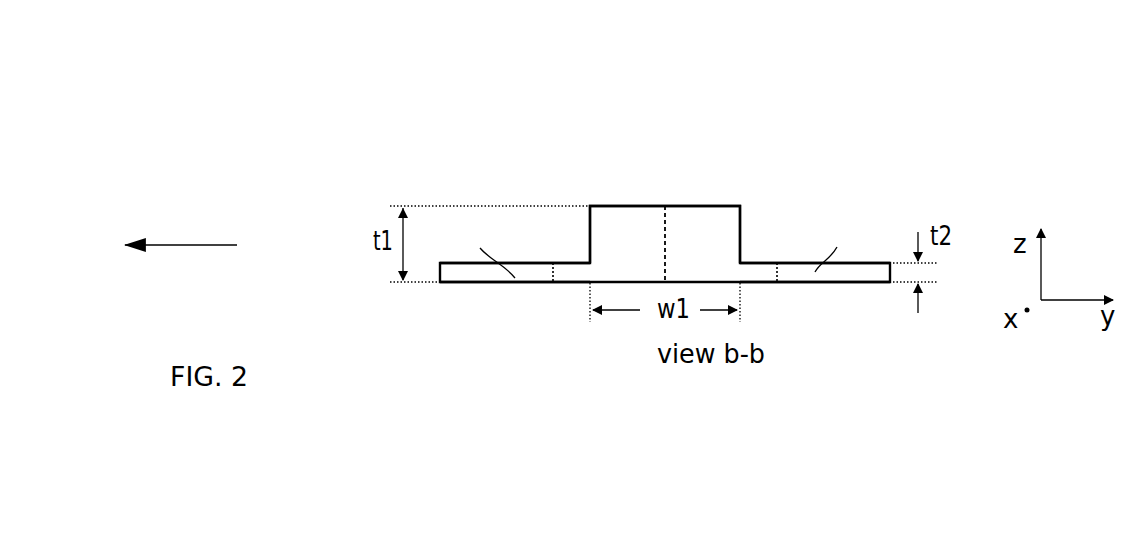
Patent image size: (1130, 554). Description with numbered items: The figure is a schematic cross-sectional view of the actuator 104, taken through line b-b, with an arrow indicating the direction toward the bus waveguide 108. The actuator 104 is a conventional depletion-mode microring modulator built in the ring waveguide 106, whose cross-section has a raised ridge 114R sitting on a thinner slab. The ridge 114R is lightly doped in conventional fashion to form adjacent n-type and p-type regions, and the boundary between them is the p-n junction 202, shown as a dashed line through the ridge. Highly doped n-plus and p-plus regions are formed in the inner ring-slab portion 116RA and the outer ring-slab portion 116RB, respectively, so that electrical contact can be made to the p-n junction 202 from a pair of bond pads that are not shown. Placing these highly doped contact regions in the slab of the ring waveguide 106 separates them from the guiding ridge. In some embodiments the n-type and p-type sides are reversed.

The actuator 104 is at (461, 124).
The ring waveguide 106 is at (816, 211).
The bus waveguide 108 is at (151, 200).
The ridge 114R is at (722, 206).
The inner ring-slab portion 116RA is at (510, 295).
The outer ring-slab portion 116RB is at (812, 295).
The p-n junction 202 is at (657, 216).